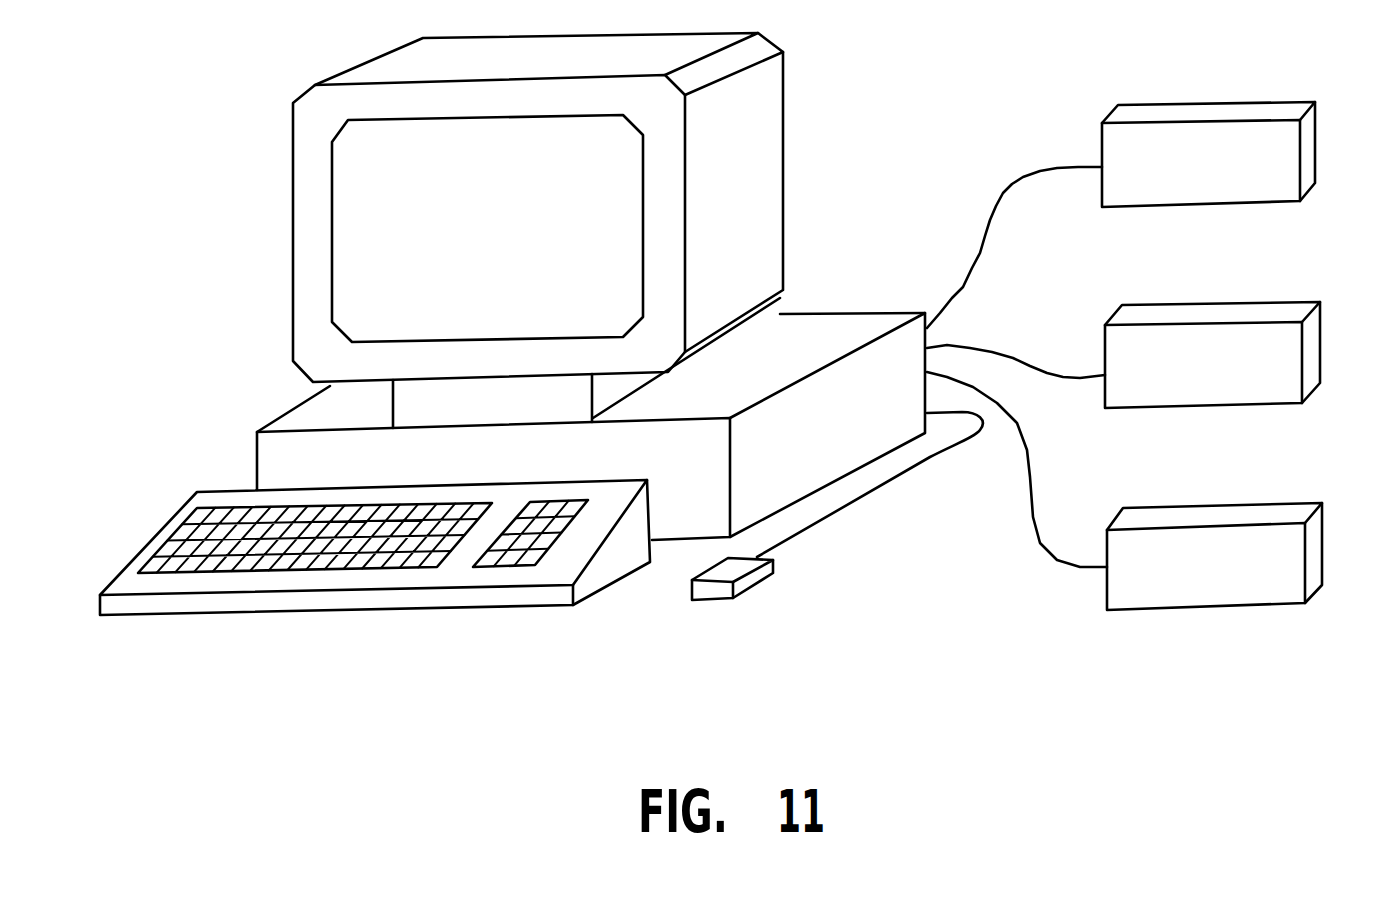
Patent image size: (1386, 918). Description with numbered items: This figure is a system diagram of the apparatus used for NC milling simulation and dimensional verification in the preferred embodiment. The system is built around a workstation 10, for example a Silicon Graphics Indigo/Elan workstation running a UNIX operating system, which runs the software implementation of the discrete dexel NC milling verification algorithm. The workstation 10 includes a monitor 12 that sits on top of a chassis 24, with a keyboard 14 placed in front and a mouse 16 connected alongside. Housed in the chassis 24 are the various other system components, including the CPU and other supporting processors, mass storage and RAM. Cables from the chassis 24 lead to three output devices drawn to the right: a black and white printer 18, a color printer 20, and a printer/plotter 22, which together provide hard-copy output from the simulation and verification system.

The workstation 10 is at (843, 110).
The monitor 12 is at (292, 243).
The keyboard 14 is at (138, 553).
The mouse 16 is at (773, 573).
The black and white printer 18 is at (1320, 137).
The color printer 20 is at (1322, 340).
The printer/plotter 22 is at (1325, 545).
The chassis 24 is at (255, 447).